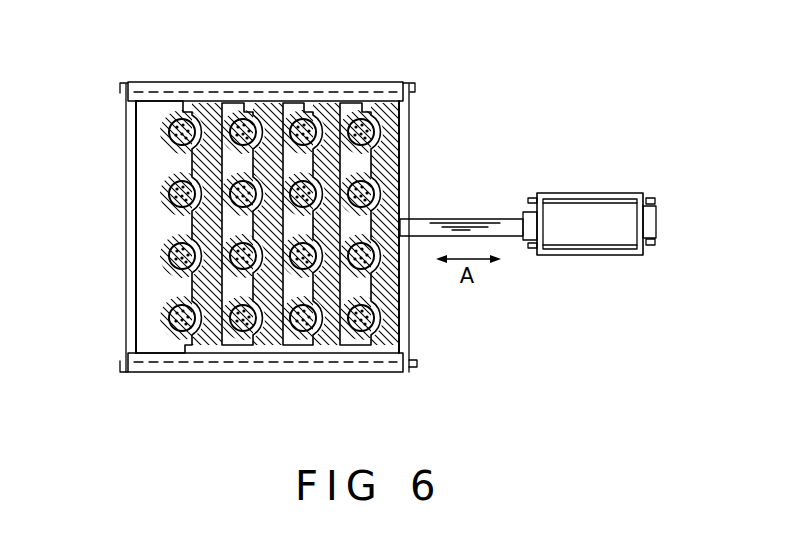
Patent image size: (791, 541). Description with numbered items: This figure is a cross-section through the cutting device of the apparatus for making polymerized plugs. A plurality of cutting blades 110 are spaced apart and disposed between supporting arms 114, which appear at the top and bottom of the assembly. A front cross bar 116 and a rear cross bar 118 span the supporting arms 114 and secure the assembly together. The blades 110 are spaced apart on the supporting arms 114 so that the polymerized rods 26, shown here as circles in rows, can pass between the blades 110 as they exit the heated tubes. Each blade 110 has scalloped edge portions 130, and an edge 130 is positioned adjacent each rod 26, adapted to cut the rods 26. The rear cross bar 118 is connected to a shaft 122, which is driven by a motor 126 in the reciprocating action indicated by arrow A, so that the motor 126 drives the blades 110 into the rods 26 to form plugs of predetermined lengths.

The rods 26 is at (171, 266).
The cutting blades 110 is at (205, 114).
The supporting arms 114 is at (153, 86).
The front cross bar 116 is at (127, 137).
The rear cross bar 118 is at (405, 149).
The shaft 122 is at (449, 217).
The motor 126 is at (585, 192).
The scalloped edge portions 130 is at (272, 132).